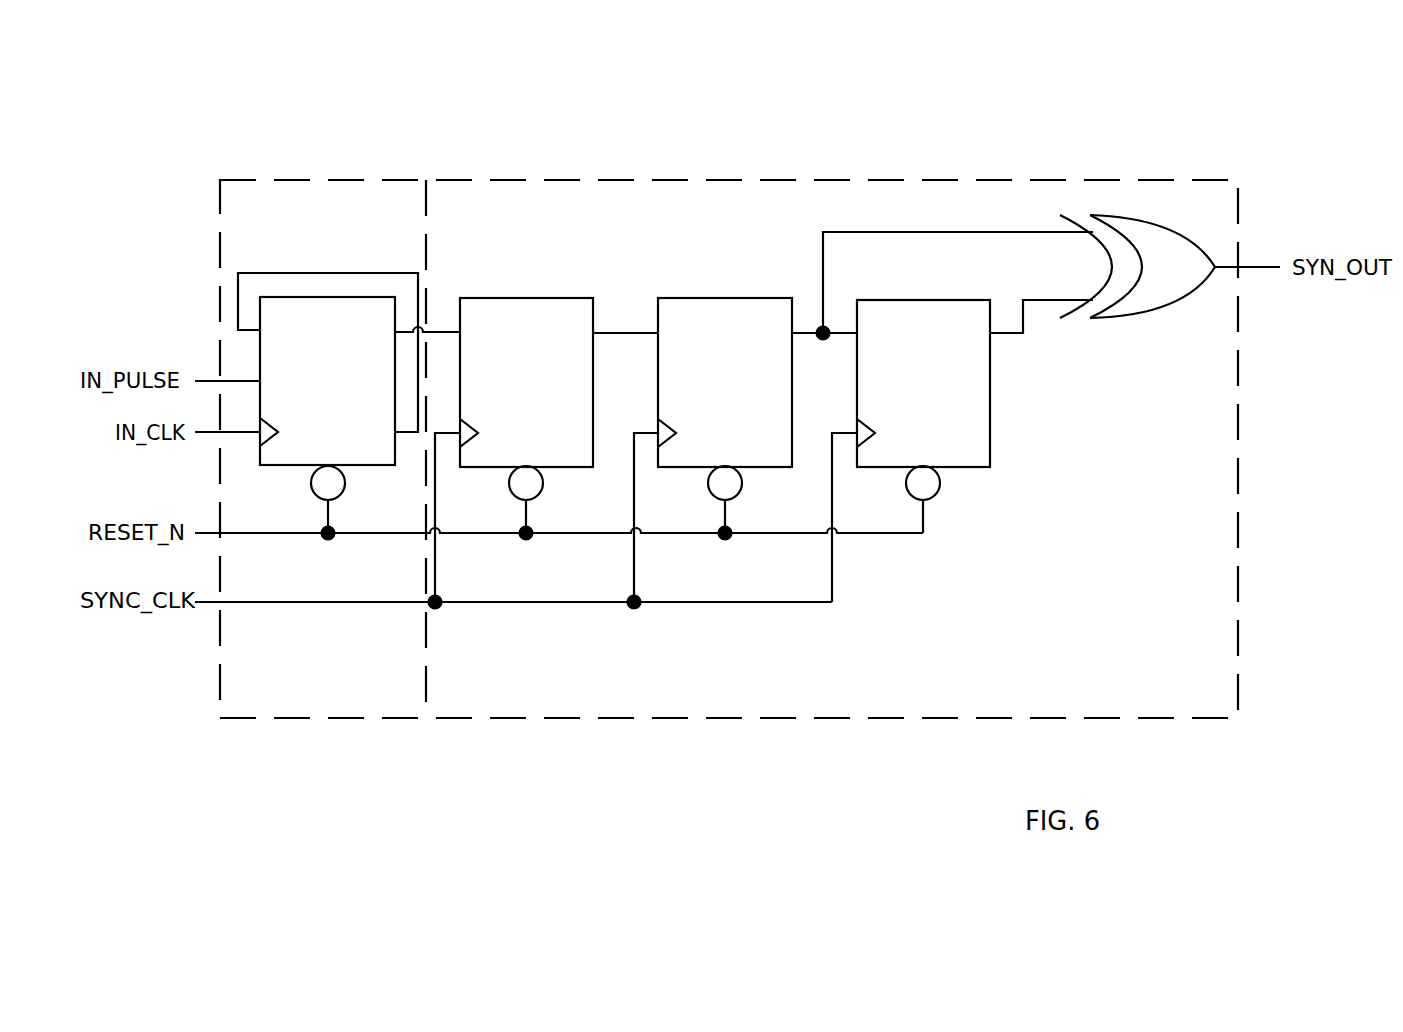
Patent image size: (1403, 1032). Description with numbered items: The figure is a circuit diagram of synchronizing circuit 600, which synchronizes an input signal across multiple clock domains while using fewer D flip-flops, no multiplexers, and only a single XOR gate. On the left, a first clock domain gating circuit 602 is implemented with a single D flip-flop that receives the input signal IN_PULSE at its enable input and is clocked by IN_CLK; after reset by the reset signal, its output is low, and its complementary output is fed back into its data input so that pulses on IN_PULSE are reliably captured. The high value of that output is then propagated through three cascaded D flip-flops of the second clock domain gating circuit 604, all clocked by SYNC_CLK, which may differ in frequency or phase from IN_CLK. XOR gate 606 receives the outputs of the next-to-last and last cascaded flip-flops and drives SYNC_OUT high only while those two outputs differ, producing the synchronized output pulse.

The synchronizing circuit 600 is at (219, 108).
The first clock domain gating circuit 602 is at (341, 214).
The second clock domain gating circuit 604 is at (497, 214).
The XOR gate 606 is at (1145, 310).